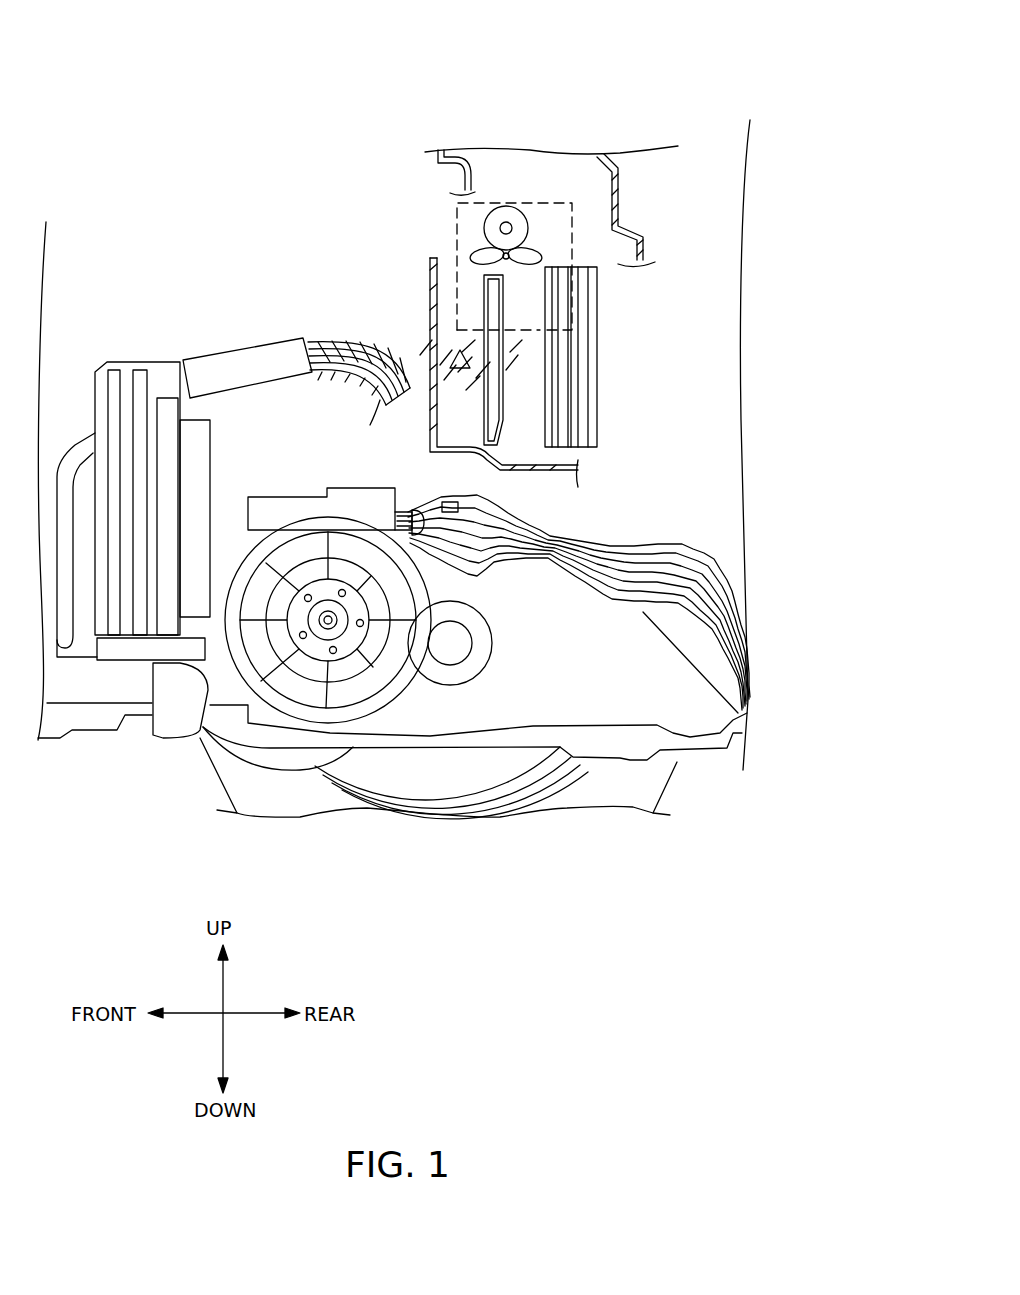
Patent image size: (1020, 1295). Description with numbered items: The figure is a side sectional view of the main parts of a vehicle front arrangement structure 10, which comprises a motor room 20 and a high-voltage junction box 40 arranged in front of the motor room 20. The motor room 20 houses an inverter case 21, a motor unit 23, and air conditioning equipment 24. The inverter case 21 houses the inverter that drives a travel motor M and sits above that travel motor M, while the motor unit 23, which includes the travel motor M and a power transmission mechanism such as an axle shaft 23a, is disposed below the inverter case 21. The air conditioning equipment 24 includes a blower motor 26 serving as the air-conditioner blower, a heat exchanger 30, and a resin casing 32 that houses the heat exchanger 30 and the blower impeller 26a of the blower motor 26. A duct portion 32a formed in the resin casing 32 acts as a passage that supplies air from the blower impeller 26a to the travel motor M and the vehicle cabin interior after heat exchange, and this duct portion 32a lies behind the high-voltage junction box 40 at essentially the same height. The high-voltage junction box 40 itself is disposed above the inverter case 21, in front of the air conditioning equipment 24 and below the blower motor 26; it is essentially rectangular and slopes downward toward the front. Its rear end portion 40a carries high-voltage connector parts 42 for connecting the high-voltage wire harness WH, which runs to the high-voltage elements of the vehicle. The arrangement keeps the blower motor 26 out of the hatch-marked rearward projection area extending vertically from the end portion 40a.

The vehicle front arrangement structure 10 is at (665, 100).
The motor room 20 is at (382, 196).
The inverter case 21 is at (305, 497).
The motor unit 23 is at (371, 698).
The axle shaft 23a is at (455, 655).
The air conditioning equipment 24 is at (531, 147).
The blower motor 26 is at (505, 202).
The blower impeller 26a is at (522, 208).
The heat exchanger 30 is at (598, 320).
The resin casing 32 is at (615, 222).
The duct portion 32a is at (463, 414).
The high-voltage junction box 40 is at (221, 358).
The end portion 40a is at (315, 375).
The high-voltage connector parts 42 is at (327, 345).
The high-voltage wire harness WH is at (357, 345).
The travel motor M is at (348, 692).